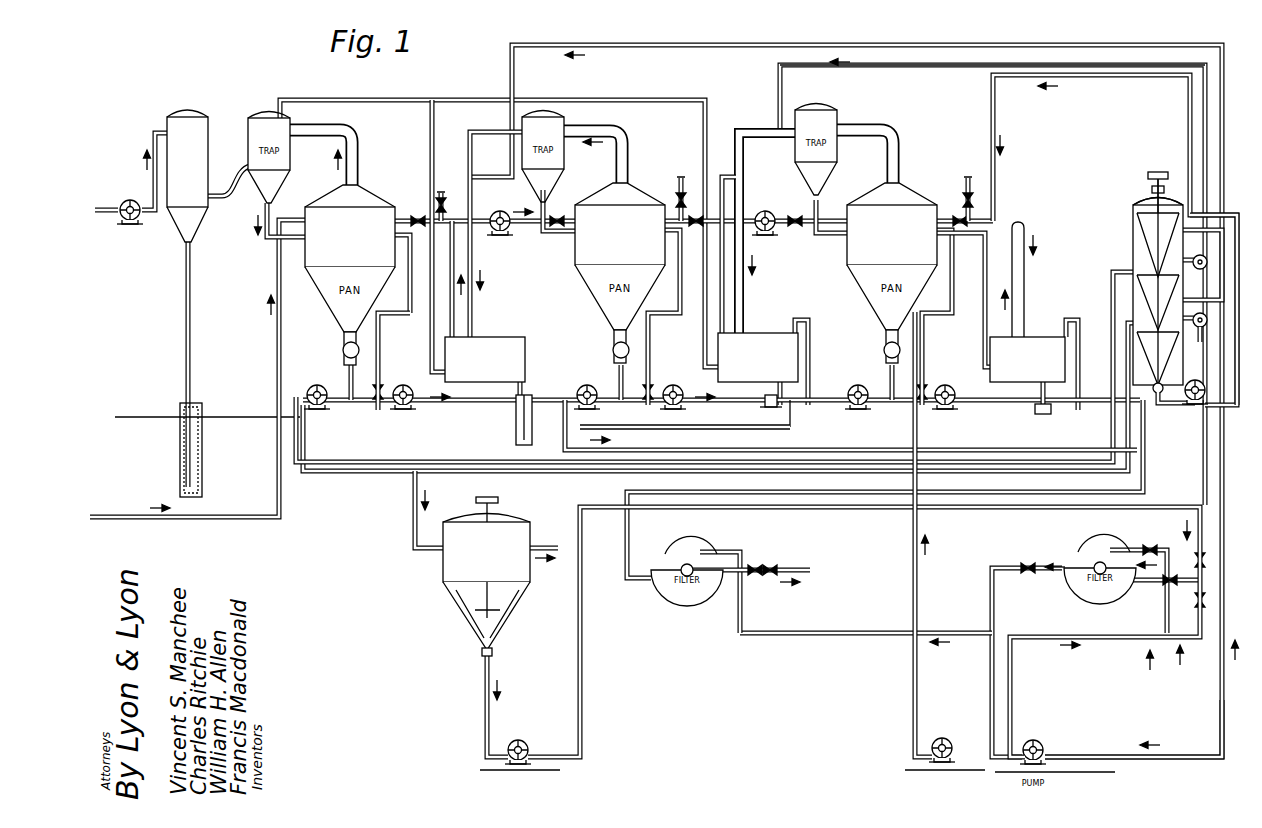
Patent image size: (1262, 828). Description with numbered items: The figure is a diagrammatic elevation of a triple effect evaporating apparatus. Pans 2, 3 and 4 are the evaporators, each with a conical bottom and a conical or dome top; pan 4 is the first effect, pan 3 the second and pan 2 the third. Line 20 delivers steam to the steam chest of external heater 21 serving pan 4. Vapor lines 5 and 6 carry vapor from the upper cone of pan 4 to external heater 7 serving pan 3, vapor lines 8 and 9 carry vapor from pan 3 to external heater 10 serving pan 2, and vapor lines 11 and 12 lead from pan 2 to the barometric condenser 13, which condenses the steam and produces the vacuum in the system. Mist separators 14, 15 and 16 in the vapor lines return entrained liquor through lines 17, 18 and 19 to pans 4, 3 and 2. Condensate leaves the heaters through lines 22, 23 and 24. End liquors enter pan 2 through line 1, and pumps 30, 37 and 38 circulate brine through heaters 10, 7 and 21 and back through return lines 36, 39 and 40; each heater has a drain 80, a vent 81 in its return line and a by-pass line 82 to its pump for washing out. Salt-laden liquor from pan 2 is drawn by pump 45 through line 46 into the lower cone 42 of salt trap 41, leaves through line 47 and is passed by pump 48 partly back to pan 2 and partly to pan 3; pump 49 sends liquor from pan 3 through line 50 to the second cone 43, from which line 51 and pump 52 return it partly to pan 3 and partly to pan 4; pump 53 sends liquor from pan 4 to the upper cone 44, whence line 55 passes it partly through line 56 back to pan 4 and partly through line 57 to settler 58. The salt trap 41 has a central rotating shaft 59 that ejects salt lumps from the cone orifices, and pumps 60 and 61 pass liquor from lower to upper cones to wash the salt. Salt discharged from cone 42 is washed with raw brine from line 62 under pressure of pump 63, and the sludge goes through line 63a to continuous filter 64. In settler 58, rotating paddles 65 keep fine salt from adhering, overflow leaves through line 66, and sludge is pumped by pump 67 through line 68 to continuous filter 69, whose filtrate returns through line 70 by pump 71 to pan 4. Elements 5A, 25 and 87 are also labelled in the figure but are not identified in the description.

The line 1 is at (276, 343).
The third effect pan 2 is at (350, 275).
The second effect pan 3 is at (620, 273).
The first effect pan 4 is at (892, 273).
The vapor line 5 is at (903, 158).
The pipe 5A is at (830, 428).
The vapor line 6 is at (751, 128).
The external heater 7 is at (760, 340).
The vapor line 8 is at (630, 150).
The vapor line 9 is at (467, 133).
The external heater 10 is at (504, 340).
The vapor line 11 is at (358, 158).
The vapor line 12 is at (240, 170).
The barometric condenser 13 is at (170, 112).
The mist separator 14 is at (828, 105).
The mist separator 15 is at (563, 122).
The mist separator 16 is at (262, 112).
The line 17 is at (818, 228).
The line 18 is at (548, 238).
The line 19 is at (268, 238).
The line 20 is at (1026, 283).
The external heater 21 is at (1038, 340).
The line 22 is at (1044, 384).
The line 23 is at (783, 393).
The line 24 is at (532, 400).
The pan outlet valve 25 is at (343, 350).
The pump 30 is at (404, 385).
The return line 36 is at (413, 274).
The pump 37 is at (673, 385).
The pump 38 is at (948, 385).
The return line 39 is at (720, 284).
The return line 40 is at (984, 290).
The multiple cone settler trap 41 is at (1140, 200).
The lower cone 42 is at (1148, 340).
The second cone 43 is at (1137, 302).
The upper cone 44 is at (1137, 252).
The pump 45 is at (316, 385).
The line 46 is at (372, 471).
The line 47 is at (1207, 320).
The pump 48 is at (500, 211).
The pump 49 is at (587, 385).
The line 50 is at (640, 449).
The line 51 is at (976, 66).
The pump 52 is at (765, 211).
The pump 53 is at (858, 385).
The line 55 is at (1212, 310).
The line 56 is at (1172, 168).
The line 57 is at (412, 520).
The settler 58 is at (443, 572).
The central rotating shaft 59 is at (1163, 202).
The pump 60 is at (1211, 339).
The pump 61 is at (1199, 273).
The line 62 is at (1228, 760).
The pump 63 is at (1205, 386).
The line 63a is at (1148, 490).
The continuous filter 64 is at (698, 580).
The rotating paddles 65 is at (503, 610).
The line 66 is at (551, 546).
The pump 67 is at (528, 746).
The line 68 is at (583, 693).
The continuous filter 69 is at (1102, 578).
The line 70 is at (918, 690).
The pump 71 is at (945, 738).
The drain 80 is at (368, 425).
The vent 81 is at (686, 172).
The by-pass line 82 is at (651, 332).
The pipe 87 is at (378, 336).